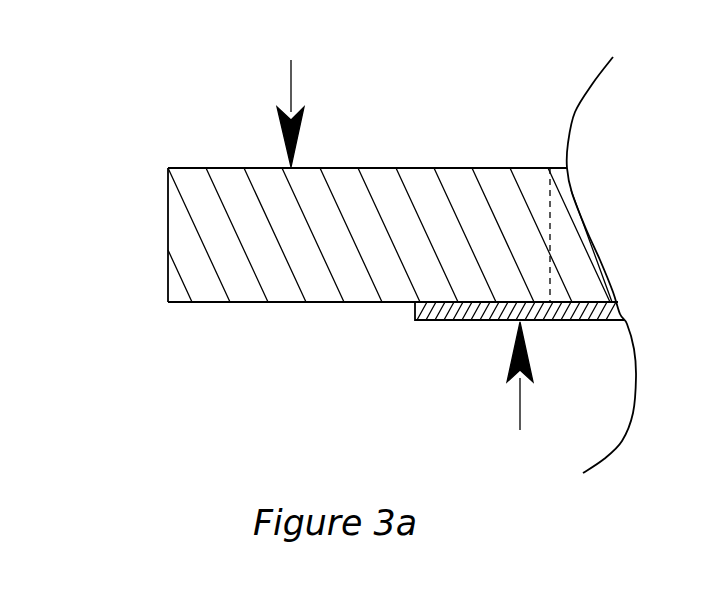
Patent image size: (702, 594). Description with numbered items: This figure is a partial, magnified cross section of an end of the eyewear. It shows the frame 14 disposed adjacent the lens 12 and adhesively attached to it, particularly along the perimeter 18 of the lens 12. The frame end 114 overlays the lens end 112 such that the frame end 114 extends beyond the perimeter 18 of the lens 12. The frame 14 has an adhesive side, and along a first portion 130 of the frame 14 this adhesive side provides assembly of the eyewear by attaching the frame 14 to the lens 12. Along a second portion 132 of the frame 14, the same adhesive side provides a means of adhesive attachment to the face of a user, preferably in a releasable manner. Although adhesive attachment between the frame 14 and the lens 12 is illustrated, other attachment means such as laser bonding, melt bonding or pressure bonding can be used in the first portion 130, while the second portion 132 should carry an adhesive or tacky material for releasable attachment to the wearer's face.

The frame 14 is at (291, 97).
The lens 12 is at (517, 393).
The first portion 130 is at (460, 192).
The frame end 114 is at (180, 233).
The second portion 132 is at (258, 292).
The perimeter 18 is at (412, 311).
The lens end 112 is at (469, 320).